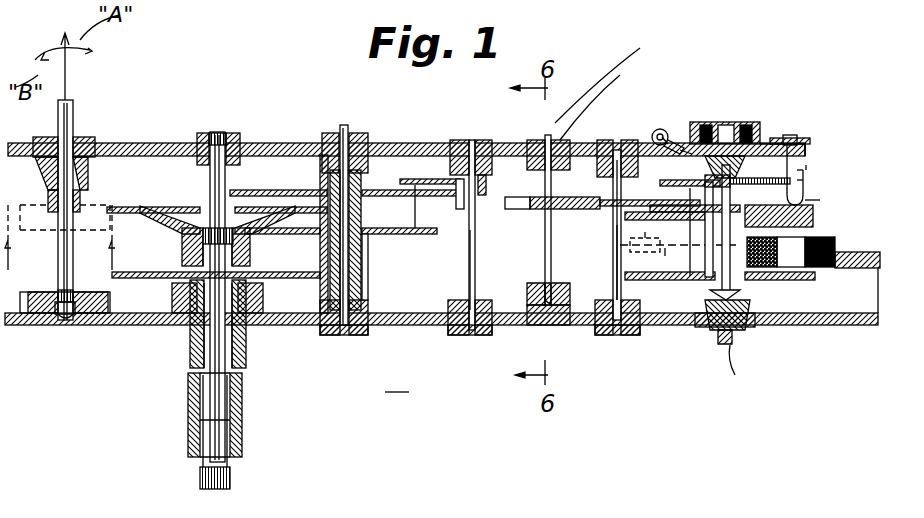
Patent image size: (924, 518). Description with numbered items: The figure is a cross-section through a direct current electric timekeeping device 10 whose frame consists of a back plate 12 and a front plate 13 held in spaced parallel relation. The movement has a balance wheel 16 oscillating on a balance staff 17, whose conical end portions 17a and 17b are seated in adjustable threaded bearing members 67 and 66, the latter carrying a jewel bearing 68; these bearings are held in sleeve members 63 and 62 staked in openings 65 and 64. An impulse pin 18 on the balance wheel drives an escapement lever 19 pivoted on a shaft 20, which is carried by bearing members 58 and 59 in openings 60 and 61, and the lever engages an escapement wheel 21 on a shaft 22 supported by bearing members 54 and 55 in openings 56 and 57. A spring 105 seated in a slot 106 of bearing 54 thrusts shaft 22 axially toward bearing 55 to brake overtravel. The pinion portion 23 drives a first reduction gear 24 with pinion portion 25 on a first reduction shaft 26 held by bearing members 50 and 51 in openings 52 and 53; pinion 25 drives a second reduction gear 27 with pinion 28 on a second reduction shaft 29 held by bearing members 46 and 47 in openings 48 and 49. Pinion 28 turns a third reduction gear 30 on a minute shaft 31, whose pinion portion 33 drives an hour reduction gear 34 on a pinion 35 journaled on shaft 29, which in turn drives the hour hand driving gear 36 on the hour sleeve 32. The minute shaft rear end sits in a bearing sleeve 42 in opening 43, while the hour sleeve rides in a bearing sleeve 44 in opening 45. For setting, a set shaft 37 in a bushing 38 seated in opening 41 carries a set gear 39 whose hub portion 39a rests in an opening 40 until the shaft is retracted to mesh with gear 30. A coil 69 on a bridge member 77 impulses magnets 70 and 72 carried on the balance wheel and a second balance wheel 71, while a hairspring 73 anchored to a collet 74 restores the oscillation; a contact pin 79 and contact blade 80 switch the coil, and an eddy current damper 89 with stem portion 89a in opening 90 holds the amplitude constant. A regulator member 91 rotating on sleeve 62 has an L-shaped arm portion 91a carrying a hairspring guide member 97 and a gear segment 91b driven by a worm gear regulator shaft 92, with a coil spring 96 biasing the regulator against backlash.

The timekeeping device 10 is at (397, 382).
The back plate 12 is at (140, 144).
The front plate 13 is at (130, 326).
The balance wheel 16 is at (815, 202).
The balance staff 17 is at (802, 170).
The pointed end portion 17a is at (735, 292).
The end portion 17b is at (720, 180).
The impulse pin 18 is at (695, 222).
The escapement lever 19 is at (643, 194).
The shaft 20 is at (610, 258).
The escapement wheel 21 is at (540, 210).
The escapement wheel shaft 22 is at (547, 250).
The pinion portion 23 is at (482, 148).
The first reduction gear 24 is at (414, 181).
The pinion portion 25 is at (432, 185).
The first reduction shaft 26 is at (474, 276).
The second reduction gear 27 is at (378, 177).
The pinion 28 is at (363, 208).
The second reduction shaft 29 is at (302, 162).
The third reduction gear 30 is at (300, 202).
The minute shaft 31 is at (236, 455).
The hour sleeve 32 is at (244, 405).
The pinion portion 33 is at (254, 247).
The hour reduction gear 34 is at (380, 236).
The pinion 35 is at (368, 283).
The hour hand driving gear 36 is at (263, 277).
The set shaft 37 is at (73, 116).
The sleeve or bushing 38 is at (90, 138).
The set gear 39 is at (92, 320).
The hub portion 39a is at (62, 323).
The opening 40 is at (52, 318).
The opening 41 is at (87, 165).
The bearing sleeve 42 is at (215, 135).
The opening 43 is at (235, 142).
The bearing sleeve 44 is at (190, 326).
The opening 45 is at (178, 298).
The bearing member 46 is at (339, 134).
The bearing member 47 is at (335, 330).
The opening 48 is at (358, 140).
The opening 49 is at (363, 333).
The bearing member 50 is at (474, 140).
The bearing member 51 is at (455, 333).
The opening 52 is at (455, 140).
The opening 53 is at (476, 335).
The bearing member 54 is at (565, 140).
The bearing member 55 is at (537, 325).
The opening 56 is at (547, 137).
The opening 57 is at (557, 325).
The bearing member 58 is at (630, 140).
The bearing member 59 is at (608, 335).
The opening 60 is at (612, 100).
The opening 61 is at (633, 340).
The sleeve member 62 is at (755, 138).
The sleeve member 63 is at (770, 330).
The opening 64 is at (725, 121).
The opening 65 is at (710, 332).
The bearing member 66 is at (736, 123).
The bearing member 67 is at (749, 373).
The jewel bearing 68 is at (788, 145).
The coil 69 is at (830, 268).
The magnet 70 is at (815, 228).
The second balance wheel 71 is at (652, 290).
The magnet 72 is at (835, 272).
The hairspring 73 is at (810, 160).
The collet 74 is at (736, 178).
The bridge member 77 is at (878, 273).
The contact pin 79 is at (714, 242).
The contact blade 80 is at (725, 200).
The eddy current damper 89 is at (680, 237).
The stem portion 89a is at (669, 280).
The opening 90 is at (615, 278).
The regulator member 91 is at (775, 138).
The L-shaped arm portion 91a is at (808, 146).
The gear segment 91b is at (668, 135).
The worm gear regulator shaft 92 is at (660, 127).
The coil spring 96 is at (688, 150).
The hairspring guide member 97 is at (805, 180).
The spring 105 is at (606, 100).
The slot 106 is at (607, 79).